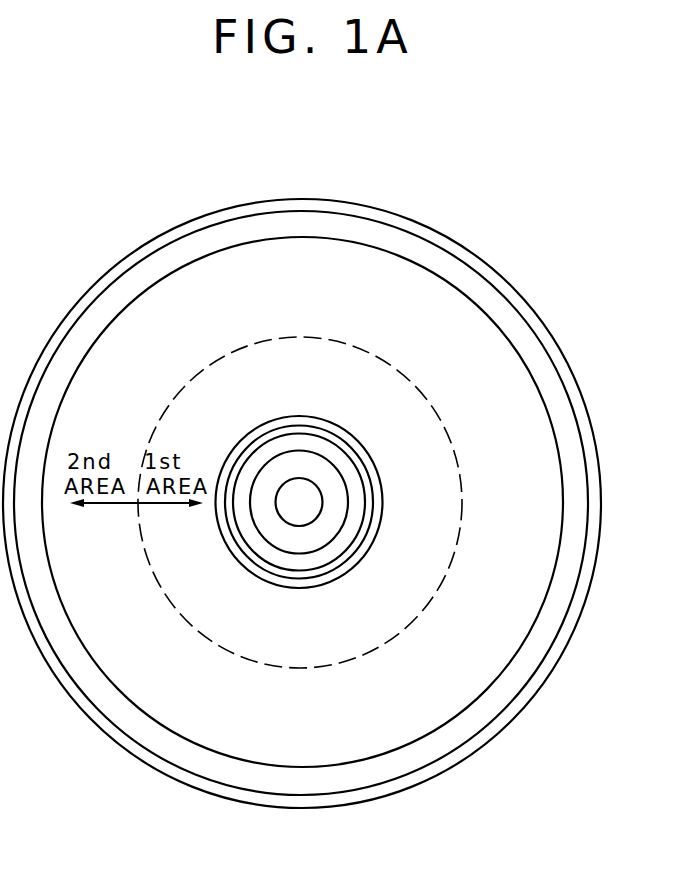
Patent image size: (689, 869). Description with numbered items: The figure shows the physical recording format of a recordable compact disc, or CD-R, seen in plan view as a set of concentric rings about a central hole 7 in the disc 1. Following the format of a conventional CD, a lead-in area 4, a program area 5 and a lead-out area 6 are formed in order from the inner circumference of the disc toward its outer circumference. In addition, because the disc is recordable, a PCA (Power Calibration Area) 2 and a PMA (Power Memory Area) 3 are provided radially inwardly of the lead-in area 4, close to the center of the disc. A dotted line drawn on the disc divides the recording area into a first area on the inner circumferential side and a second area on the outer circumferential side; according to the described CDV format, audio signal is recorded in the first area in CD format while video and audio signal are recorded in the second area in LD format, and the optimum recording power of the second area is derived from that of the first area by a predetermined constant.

The optical disk 1 is at (273, 196).
The PCA (Power Calibration Area) 2 is at (323, 553).
The PMA (Power Memory Area) 3 is at (367, 508).
The lead-in area 4 is at (372, 467).
The program area 5 is at (417, 285).
The lead-out area 6 is at (398, 240).
The center hole 7 is at (285, 513).